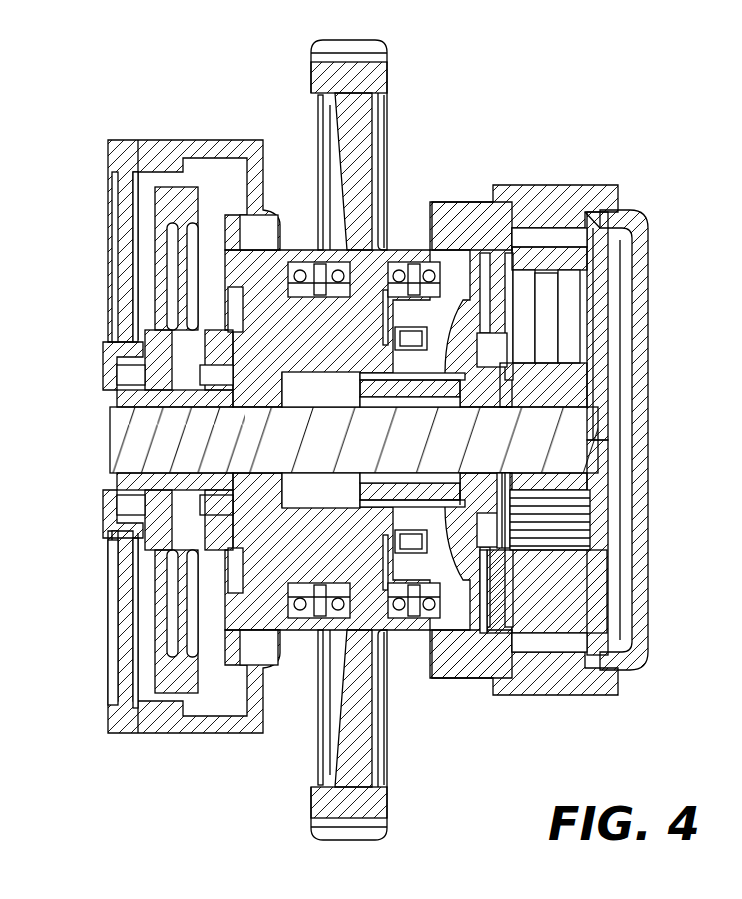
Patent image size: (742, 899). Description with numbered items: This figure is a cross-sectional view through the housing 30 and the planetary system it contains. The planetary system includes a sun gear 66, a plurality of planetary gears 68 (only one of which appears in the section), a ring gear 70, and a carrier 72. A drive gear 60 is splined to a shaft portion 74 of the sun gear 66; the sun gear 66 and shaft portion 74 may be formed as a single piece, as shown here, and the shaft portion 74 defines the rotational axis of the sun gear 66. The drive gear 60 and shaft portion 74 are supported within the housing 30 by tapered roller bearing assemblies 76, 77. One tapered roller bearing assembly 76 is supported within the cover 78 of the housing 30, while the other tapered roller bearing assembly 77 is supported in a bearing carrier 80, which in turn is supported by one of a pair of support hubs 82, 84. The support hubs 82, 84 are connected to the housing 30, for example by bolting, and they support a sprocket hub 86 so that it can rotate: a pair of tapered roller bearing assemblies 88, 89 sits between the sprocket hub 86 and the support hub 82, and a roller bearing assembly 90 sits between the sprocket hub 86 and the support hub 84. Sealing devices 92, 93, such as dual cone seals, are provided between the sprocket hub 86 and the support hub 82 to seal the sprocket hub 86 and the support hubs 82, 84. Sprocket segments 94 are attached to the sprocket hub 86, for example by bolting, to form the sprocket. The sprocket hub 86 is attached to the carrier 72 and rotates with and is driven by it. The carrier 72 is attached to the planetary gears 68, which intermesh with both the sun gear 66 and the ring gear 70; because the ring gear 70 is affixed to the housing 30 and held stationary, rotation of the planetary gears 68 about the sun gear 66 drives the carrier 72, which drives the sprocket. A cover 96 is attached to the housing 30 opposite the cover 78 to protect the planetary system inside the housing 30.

The housing 30 is at (196, 140).
The drive gear 60 is at (155, 235).
The sun gear 66 is at (573, 465).
The planetary gears 68 is at (610, 268).
The ring gear 70 is at (586, 222).
The carrier 72 is at (597, 612).
The shaft portion 74 is at (125, 443).
The tapered roller bearing assembly 76 is at (118, 370).
The tapered roller bearing assembly 77 is at (115, 515).
The cover 78 is at (108, 660).
The bearing carrier 80 is at (140, 548).
The support hub 82 is at (283, 262).
The support hub 84 is at (420, 262).
The sprocket hub 86 is at (372, 167).
The tapered roller bearing assembly 88 is at (235, 330).
The tapered roller bearing assembly 89 is at (160, 590).
The roller bearing assembly 90 is at (463, 500).
The sealing device 92 is at (302, 622).
The sealing device 93 is at (390, 622).
The sprocket segments 94 is at (345, 42).
The cover 96 is at (648, 360).